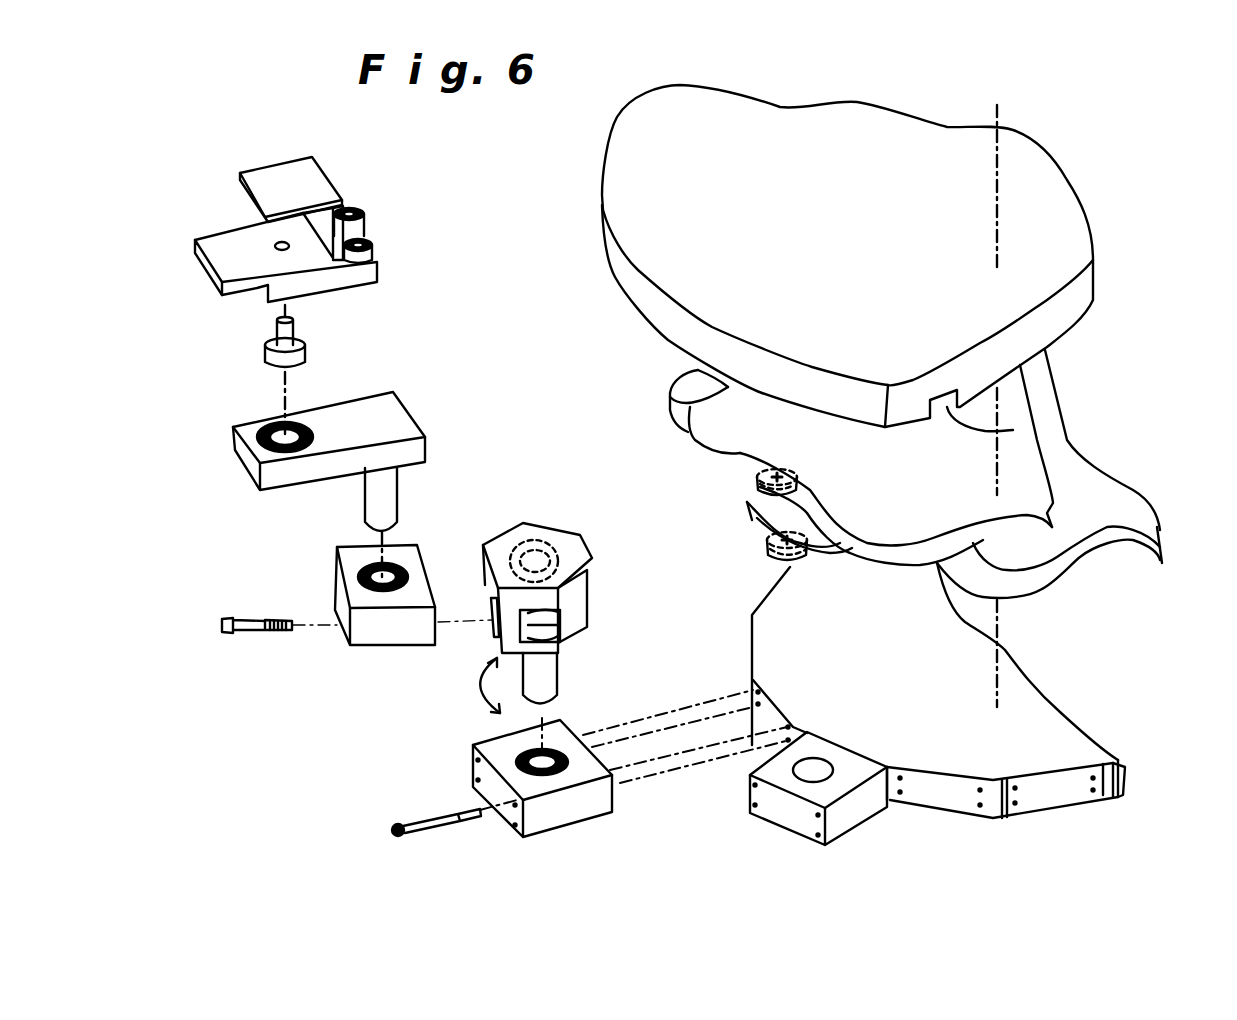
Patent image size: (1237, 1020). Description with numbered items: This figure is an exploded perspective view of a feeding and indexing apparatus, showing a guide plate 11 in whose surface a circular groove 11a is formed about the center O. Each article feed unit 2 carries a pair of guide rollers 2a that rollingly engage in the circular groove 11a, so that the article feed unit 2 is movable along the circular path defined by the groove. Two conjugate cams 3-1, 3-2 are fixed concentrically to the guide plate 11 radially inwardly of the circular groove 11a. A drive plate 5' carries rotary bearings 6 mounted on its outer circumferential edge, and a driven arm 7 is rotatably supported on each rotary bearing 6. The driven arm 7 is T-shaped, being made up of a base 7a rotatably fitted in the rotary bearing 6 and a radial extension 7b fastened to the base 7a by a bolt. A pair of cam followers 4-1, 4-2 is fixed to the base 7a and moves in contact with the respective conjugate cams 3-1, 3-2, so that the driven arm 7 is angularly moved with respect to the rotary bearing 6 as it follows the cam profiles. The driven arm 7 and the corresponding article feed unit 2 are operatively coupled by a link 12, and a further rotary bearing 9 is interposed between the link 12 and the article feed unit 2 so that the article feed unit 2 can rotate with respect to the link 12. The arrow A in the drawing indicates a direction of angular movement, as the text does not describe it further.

The article feed unit 2 is at (322, 287).
The guide rollers 2a is at (372, 242).
The rotary bearing 9 is at (265, 432).
The link 12 is at (387, 420).
The driven arm 7 is at (462, 718).
The base 7a is at (503, 642).
The radial extension 7b is at (389, 633).
The cam follower 4-1 is at (557, 623).
The cam follower 4-2 is at (537, 540).
The rotary bearing 6 is at (562, 817).
The guide plate 11 is at (632, 176).
The circular groove 11a is at (1013, 430).
The conjugate cam 3-1 is at (706, 430).
The conjugate cam 3-2 is at (770, 515).
The drive plate 5' is at (938, 720).
The center O is at (991, 388).
The rotation direction A is at (873, 697).